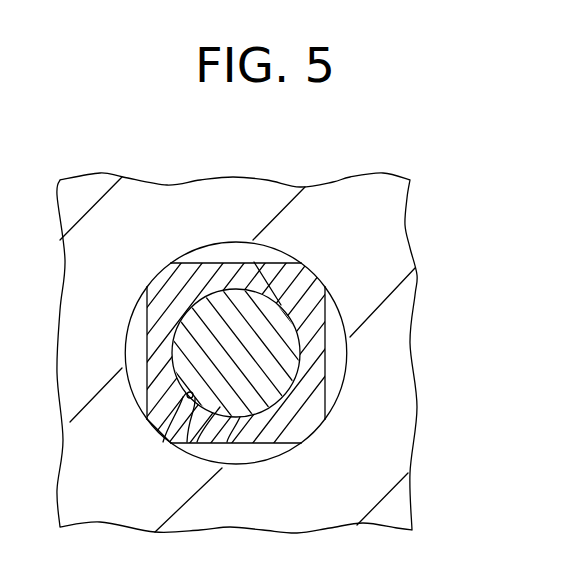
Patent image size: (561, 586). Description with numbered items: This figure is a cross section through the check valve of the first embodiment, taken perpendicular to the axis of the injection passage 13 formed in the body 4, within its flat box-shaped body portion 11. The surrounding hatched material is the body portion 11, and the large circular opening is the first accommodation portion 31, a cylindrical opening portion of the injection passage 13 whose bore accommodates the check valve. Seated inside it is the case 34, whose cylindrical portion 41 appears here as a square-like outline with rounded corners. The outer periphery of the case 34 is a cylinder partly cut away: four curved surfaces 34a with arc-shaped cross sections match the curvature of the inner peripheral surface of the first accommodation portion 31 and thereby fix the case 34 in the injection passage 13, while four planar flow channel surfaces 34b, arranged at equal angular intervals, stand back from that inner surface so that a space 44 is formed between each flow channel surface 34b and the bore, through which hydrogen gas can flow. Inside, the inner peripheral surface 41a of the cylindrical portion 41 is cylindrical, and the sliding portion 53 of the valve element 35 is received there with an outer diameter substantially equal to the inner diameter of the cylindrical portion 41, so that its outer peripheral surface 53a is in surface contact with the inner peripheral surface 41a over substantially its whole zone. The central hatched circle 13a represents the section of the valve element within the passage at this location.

The body portion 11 is at (60, 190).
The body 4 is at (213, 353).
The cylindrical portion 41 is at (227, 333).
The case 34 is at (227, 333).
The space 44 is at (238, 252).
The curved surface 34a is at (148, 268).
The flow channel surface 34b is at (341, 302).
The first accommodation portion 31 is at (210, 357).
The injection passage 13 is at (218, 353).
The shaft end portion 13a is at (300, 350).
The inner peripheral surface of the cylindrical portion 41a is at (159, 419).
The outer peripheral surface of the sliding portion 53a is at (182, 451).
The sliding portion 53 is at (242, 382).
The holding member 35 is at (242, 382).